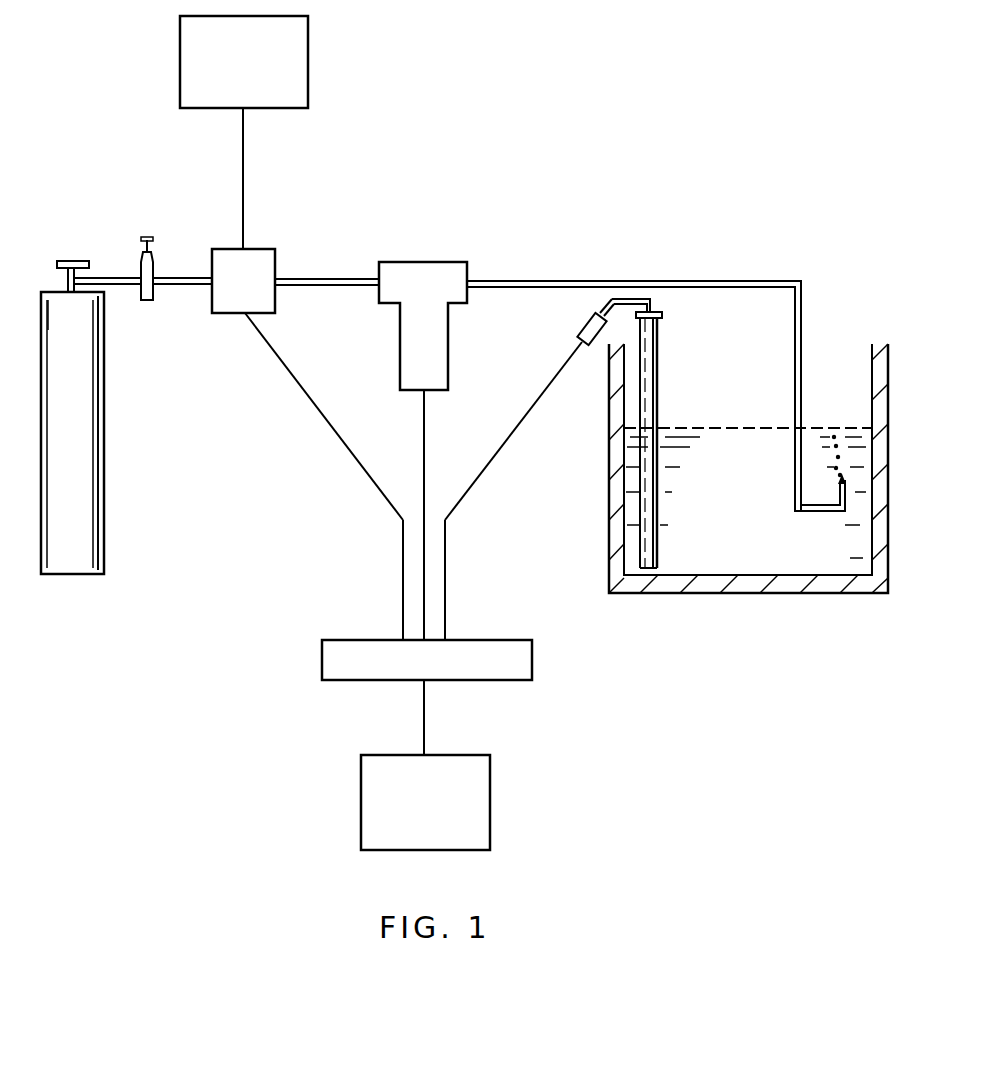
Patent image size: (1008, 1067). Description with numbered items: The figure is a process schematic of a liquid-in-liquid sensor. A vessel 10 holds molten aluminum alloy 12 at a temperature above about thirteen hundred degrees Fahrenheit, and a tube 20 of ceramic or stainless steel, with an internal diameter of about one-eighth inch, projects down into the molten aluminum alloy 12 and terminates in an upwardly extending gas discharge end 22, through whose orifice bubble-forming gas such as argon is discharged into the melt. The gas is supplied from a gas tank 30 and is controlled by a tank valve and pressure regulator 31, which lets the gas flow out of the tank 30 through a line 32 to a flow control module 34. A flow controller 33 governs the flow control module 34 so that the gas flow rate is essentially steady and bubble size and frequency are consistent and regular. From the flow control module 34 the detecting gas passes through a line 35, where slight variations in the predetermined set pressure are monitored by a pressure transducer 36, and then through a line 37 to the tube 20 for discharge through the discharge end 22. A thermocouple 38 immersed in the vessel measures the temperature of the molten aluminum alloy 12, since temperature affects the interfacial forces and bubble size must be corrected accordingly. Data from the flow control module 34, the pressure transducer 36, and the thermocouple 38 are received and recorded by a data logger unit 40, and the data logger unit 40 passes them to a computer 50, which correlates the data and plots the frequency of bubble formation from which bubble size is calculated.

The vessel 10 is at (791, 600).
The molten aluminum alloy 12 is at (762, 547).
The tube 20 is at (795, 392).
The gas discharge end 22 is at (838, 490).
The gas tank 30 is at (104, 447).
The tank valve and pressure regulator 31 is at (143, 250).
The line 32 is at (190, 285).
The flow controller 33 is at (308, 72).
The flow control module 34 is at (255, 249).
The line 35 is at (305, 278).
The pressure transducer 36 is at (450, 262).
The line 37 is at (577, 282).
The thermocouple 38 is at (660, 332).
The data logger unit 40 is at (493, 640).
The computer 50 is at (490, 780).